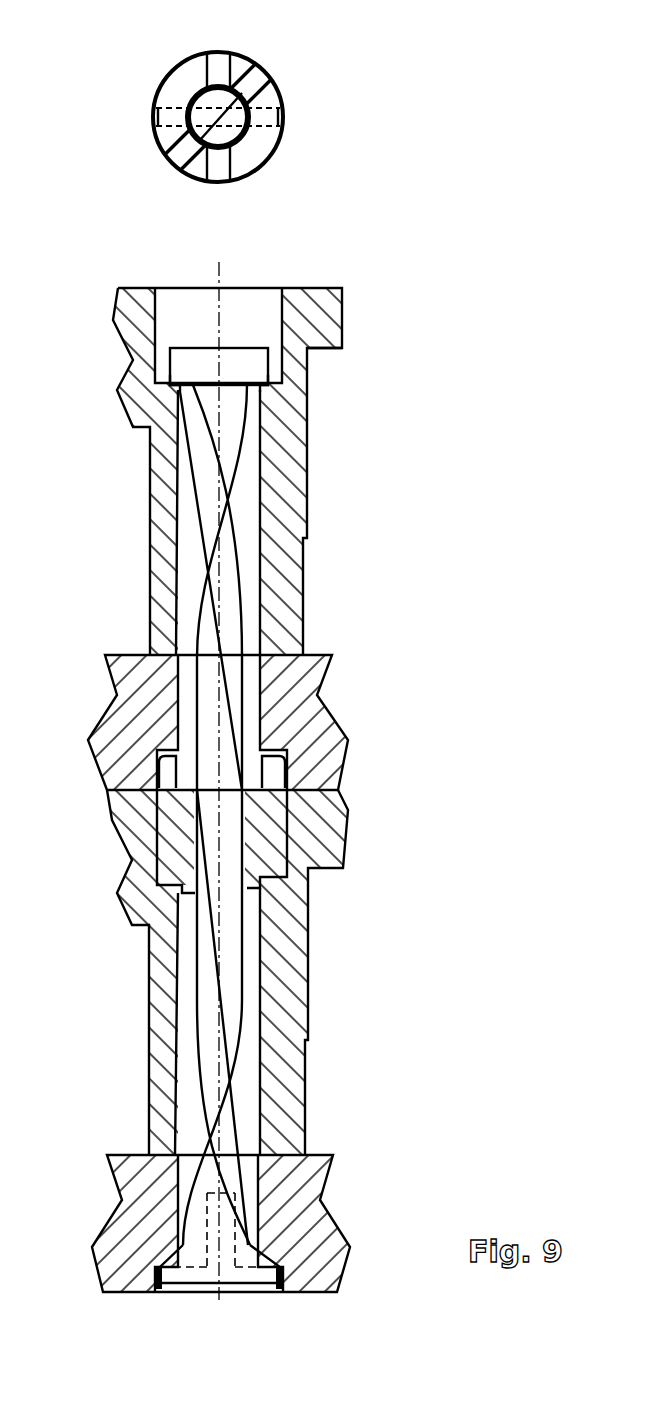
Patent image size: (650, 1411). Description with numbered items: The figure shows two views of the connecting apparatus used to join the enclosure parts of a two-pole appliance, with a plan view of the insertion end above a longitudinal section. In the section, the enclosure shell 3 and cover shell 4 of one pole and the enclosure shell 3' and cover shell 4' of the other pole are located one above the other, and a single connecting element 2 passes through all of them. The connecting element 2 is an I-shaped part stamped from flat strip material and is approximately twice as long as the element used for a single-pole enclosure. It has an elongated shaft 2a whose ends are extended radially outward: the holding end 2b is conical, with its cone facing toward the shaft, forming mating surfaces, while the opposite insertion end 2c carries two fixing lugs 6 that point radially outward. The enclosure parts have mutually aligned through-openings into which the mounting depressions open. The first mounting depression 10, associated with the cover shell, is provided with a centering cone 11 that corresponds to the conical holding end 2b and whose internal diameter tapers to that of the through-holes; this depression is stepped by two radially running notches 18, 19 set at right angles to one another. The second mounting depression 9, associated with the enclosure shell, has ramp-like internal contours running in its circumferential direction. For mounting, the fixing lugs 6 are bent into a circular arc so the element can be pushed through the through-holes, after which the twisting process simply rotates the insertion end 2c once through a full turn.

The connecting element 2 is at (197, 977).
The elongated shaft 2a is at (212, 1025).
The holding end 2b is at (254, 1275).
The insertion end 2c is at (197, 368).
The enclosure shell 3 is at (229, 972).
The enclosure shell 3' is at (228, 353).
The cover shell 4 is at (245, 1223).
The cover shell 4' is at (250, 722).
The fixing lugs 6 is at (170, 366).
The second mounting depression 9 is at (248, 313).
The first mounting depression 10 is at (175, 770).
The centering cone 11 is at (270, 770).
The notch 18 is at (218, 62).
The notch 19 is at (280, 86).